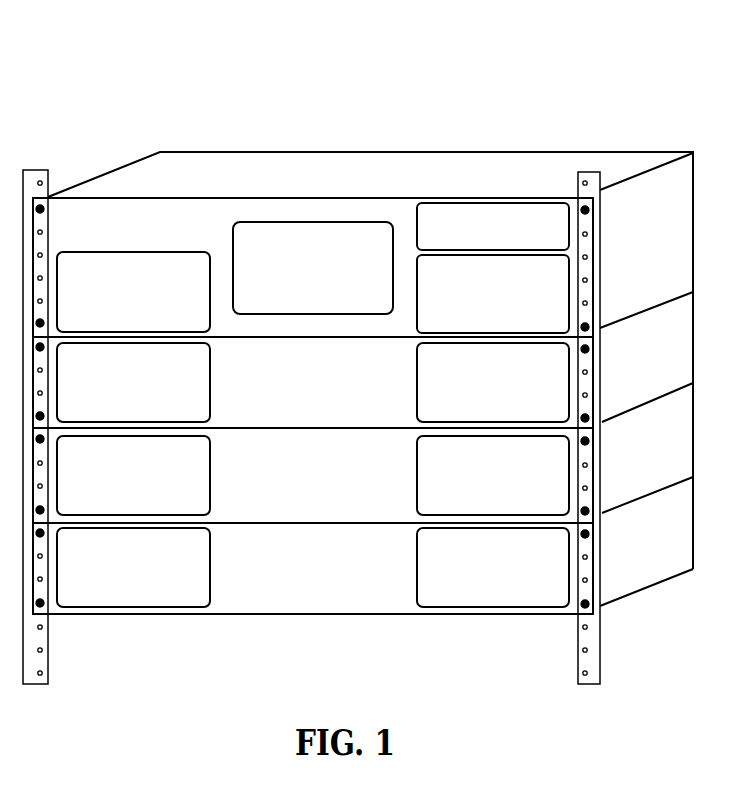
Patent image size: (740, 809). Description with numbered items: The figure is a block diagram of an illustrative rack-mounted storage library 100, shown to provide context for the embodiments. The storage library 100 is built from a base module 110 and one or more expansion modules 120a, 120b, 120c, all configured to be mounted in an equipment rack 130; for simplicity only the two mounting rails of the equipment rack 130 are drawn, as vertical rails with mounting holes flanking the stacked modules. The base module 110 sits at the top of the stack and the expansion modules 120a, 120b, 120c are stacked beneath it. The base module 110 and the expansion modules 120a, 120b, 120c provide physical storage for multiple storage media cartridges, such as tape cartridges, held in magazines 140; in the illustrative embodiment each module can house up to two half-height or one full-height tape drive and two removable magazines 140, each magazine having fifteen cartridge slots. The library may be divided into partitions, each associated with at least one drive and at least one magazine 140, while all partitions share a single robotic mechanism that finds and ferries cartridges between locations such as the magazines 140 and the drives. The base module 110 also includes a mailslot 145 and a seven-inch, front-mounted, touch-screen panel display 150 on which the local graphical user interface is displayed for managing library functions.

The rack-mounted storage library 100 is at (532, 52).
The base module 110 is at (363, 267).
The expansion module 120a is at (363, 382).
The expansion module 120b is at (363, 475).
The expansion module 120c is at (363, 568).
The equipment rack 130 is at (601, 661).
The magazine 140 is at (493, 294).
The mailslot 145 is at (493, 226).
The touch-screen panel display 150 is at (313, 268).